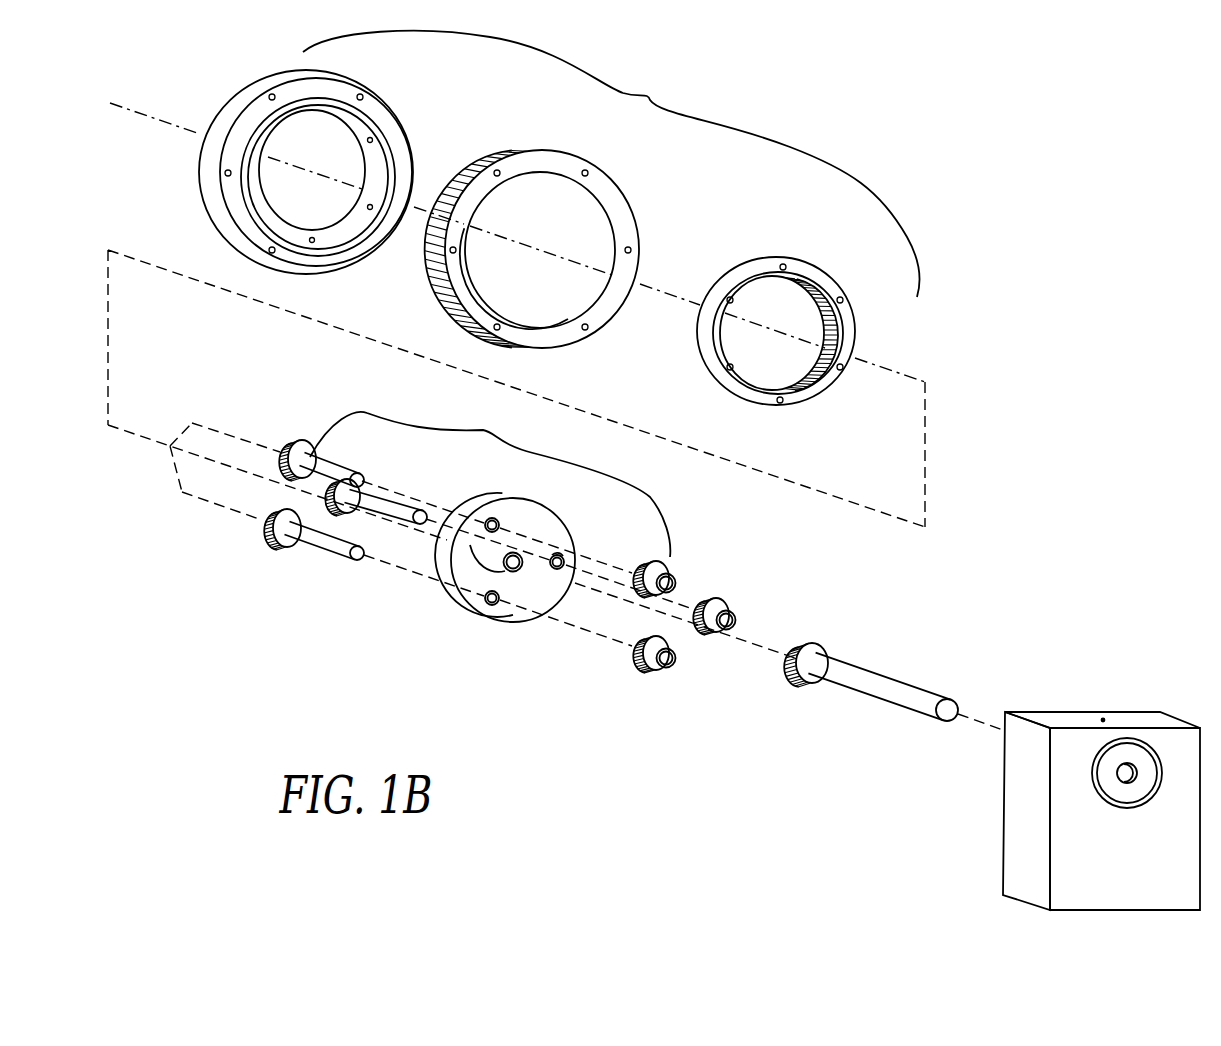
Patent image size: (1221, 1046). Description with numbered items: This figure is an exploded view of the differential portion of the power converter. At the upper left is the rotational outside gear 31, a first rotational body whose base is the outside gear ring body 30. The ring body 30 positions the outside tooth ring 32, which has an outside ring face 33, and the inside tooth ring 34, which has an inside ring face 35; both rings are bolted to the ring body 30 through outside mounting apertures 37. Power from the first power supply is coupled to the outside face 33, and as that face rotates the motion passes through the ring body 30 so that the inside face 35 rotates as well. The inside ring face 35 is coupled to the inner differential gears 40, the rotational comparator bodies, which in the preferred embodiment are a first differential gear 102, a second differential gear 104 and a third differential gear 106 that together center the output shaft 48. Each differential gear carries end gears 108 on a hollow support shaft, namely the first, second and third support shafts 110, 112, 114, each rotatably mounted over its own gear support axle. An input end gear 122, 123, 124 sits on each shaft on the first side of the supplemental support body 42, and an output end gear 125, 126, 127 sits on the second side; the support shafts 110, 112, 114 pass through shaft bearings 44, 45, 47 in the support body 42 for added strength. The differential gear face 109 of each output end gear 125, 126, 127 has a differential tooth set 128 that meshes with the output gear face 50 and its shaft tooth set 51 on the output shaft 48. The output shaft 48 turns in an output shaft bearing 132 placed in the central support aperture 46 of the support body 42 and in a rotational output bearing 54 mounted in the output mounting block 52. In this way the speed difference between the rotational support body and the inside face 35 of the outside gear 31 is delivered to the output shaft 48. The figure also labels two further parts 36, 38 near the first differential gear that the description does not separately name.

The outside gear ring body 30 is at (328, 76).
The rotational outside gear 31 is at (611, 164).
The outside tooth ring 32 is at (532, 221).
The outside ring face 33 is at (498, 150).
The inside tooth ring 34 is at (801, 303).
The inside ring face 35 is at (833, 315).
The shaft assembly 36 is at (312, 434).
The outside mounting apertures 37 is at (370, 138).
The shaft 38 is at (361, 453).
The inner differential gears 40 is at (750, 578).
The supplemental support body 42 is at (505, 576).
The shaft bearing 44 is at (562, 553).
The shaft bearing 45 is at (492, 613).
The central support aperture 46 is at (520, 572).
The shaft bearing 47 is at (453, 592).
The output shaft 48 is at (888, 683).
The output gear face 50 is at (871, 647).
The shaft tooth set 51 is at (800, 650).
The output mounting block 52 is at (1068, 811).
The rotational output bearing 54 is at (1098, 790).
The first differential gear 102 is at (260, 431).
The second differential gear 104 is at (271, 562).
The third differential gear 106 is at (358, 507).
The end gears 108 is at (674, 655).
The differential gear face 109 is at (490, 478).
The first support shaft 110 is at (343, 468).
The second support shaft 112 is at (322, 548).
The third support shaft 114 is at (397, 503).
The input end gear 122 is at (640, 666).
The input end gear 123 is at (650, 562).
The input end gear 124 is at (740, 616).
The output end gear 125 is at (289, 451).
The output end gear 126 is at (270, 542).
The output end gear 127 is at (360, 510).
The differential tooth set 128 is at (750, 578).
The output shaft bearing 132 is at (492, 557).